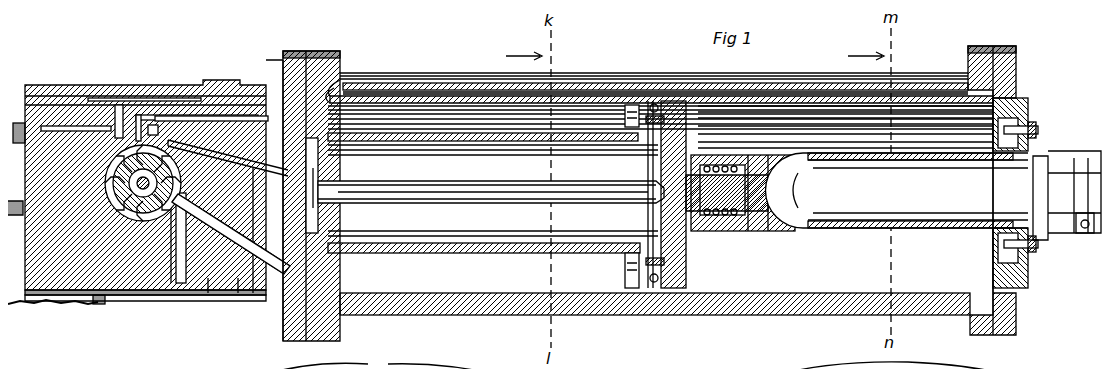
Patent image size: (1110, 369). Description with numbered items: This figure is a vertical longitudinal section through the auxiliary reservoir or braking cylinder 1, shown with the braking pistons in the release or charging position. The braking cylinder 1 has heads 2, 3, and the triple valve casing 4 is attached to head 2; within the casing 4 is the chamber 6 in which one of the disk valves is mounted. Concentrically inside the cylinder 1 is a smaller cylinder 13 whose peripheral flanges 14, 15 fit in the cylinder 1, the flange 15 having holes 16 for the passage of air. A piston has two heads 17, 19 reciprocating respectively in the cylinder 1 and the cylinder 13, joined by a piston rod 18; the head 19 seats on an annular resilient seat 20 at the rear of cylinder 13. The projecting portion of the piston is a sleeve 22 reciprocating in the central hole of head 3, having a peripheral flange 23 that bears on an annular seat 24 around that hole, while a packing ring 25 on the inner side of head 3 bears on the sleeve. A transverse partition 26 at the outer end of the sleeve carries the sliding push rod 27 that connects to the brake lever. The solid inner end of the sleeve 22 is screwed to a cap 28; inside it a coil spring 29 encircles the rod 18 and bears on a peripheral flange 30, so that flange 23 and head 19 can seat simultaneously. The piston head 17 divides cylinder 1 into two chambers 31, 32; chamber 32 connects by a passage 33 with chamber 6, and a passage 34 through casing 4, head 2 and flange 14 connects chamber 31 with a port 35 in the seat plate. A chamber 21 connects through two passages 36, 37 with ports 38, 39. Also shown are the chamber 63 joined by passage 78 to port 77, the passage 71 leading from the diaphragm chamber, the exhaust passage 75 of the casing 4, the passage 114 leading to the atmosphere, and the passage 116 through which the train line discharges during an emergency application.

The braking cylinder 1 is at (604, 66).
The head 2 is at (276, 300).
The head 3 is at (1008, 70).
The triple valve casing 4 is at (84, 268).
The chamber 6 is at (130, 100).
The smaller cylinder 13 is at (450, 125).
The peripheral flange 14 is at (345, 100).
The peripheral flange 15 is at (612, 248).
The holes 16 is at (624, 262).
The piston head 17 is at (684, 250).
The piston rod 18 is at (518, 190).
The piston head 19 is at (330, 210).
The annular resilient seat 20 is at (320, 170).
The chamber 21 is at (345, 250).
The sleeve 22 is at (916, 143).
The peripheral flange 23 is at (1030, 132).
The annular seat 24 is at (1020, 116).
The packing ring 25 is at (988, 137).
The transverse partition 26 is at (990, 203).
The push rod 27 is at (913, 192).
The cap 28 is at (755, 224).
The coil spring 29 is at (716, 224).
The peripheral flange 30 is at (738, 148).
The chamber 31 is at (655, 289).
The chamber 32 is at (808, 272).
The passage 33 is at (260, 55).
The passage 34 is at (344, 274).
The port 35 is at (151, 282).
The passage 36 is at (198, 282).
The passage 37 is at (228, 284).
The port 38 is at (165, 145).
The port 39 is at (203, 95).
The chamber 63 is at (203, 147).
The passage 71 is at (46, 92).
The passage 75 is at (90, 103).
The port 77 is at (330, 366).
The passage 78 is at (218, 72).
The passage 114 is at (174, 290).
The passage 116 is at (168, 290).